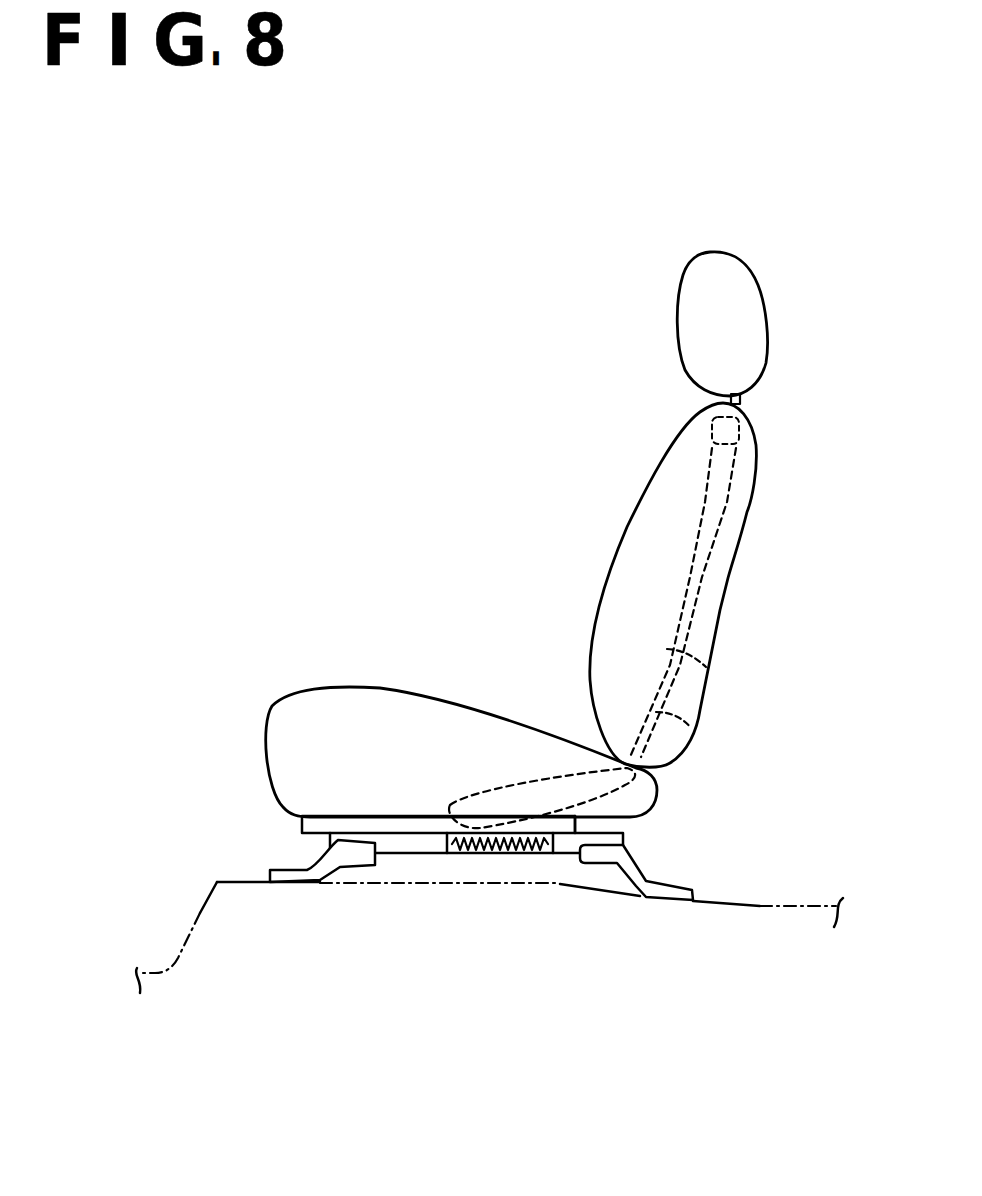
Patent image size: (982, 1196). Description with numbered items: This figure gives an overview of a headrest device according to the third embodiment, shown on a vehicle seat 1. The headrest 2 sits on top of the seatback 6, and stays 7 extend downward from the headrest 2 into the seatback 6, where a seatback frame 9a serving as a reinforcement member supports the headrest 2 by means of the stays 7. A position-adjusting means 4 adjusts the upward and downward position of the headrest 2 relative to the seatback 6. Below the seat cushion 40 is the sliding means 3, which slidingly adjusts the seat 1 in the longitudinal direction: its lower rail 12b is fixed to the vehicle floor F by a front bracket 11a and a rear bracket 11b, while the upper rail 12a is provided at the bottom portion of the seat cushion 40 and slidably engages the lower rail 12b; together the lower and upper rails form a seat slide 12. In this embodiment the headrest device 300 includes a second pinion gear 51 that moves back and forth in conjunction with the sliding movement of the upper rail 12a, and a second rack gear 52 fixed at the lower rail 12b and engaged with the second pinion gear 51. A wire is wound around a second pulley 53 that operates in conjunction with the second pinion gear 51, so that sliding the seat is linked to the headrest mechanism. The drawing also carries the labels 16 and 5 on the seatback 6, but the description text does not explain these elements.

The seat 1 is at (374, 418).
The headrest 2 is at (750, 298).
The sliding means 3 is at (644, 837).
The position-adjusting means 4 is at (756, 511).
The sensor 5 is at (718, 667).
The seatback 6 is at (728, 611).
The stays 7 is at (740, 402).
The seatback frame 9a is at (700, 414).
The bracket 11a is at (300, 870).
The bracket 11b is at (650, 868).
The seat slide 12 is at (341, 843).
The upper rail 12a is at (302, 816).
The lower rail 12b is at (417, 848).
The sensor electrode 16 is at (734, 703).
The seat cushion 40 is at (378, 696).
The second pinion gear 51 is at (491, 776).
The second rack gear 52 is at (503, 857).
The second pulley 53 is at (453, 805).
The headrest device 300 is at (718, 576).
The vehicle floor F is at (155, 975).